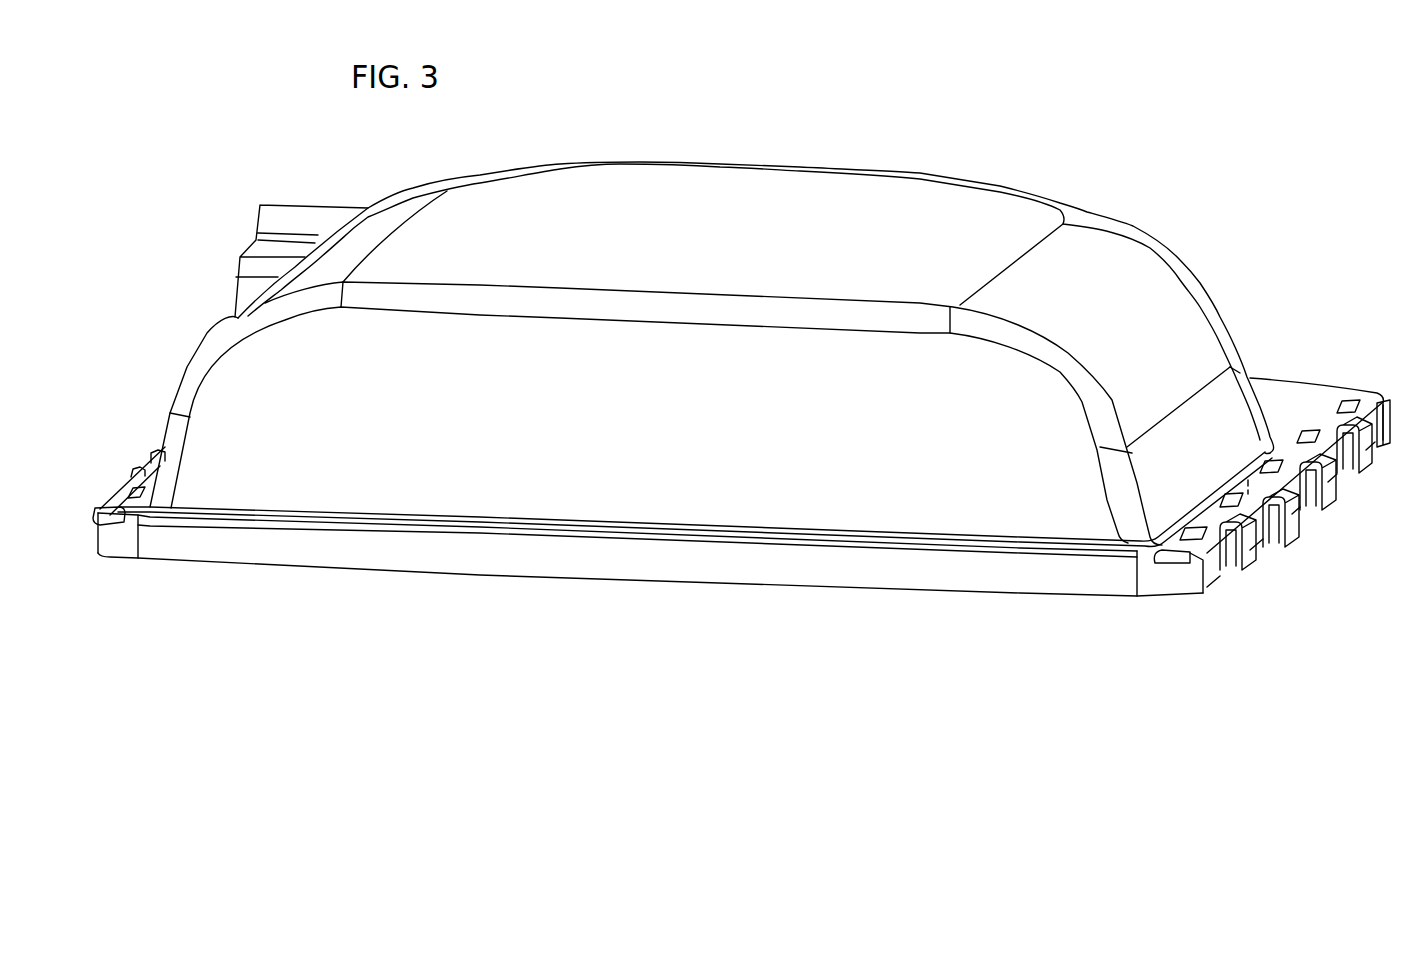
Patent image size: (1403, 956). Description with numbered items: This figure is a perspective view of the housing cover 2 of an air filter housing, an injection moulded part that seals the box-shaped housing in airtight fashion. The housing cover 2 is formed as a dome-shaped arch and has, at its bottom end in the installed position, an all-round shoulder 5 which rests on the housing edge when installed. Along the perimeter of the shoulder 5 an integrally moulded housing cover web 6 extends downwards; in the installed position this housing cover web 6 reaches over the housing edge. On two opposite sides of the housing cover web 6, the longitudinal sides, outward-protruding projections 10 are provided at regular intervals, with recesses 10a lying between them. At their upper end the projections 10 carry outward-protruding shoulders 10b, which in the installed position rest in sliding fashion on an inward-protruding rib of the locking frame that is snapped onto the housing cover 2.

The housing cover 2 is at (1079, 220).
The all-round shoulder 5 is at (1283, 400).
The housing cover web 6 is at (1083, 570).
The projection 10 is at (1190, 563).
The recess 10a is at (1257, 540).
The shoulder 10b is at (1327, 487).